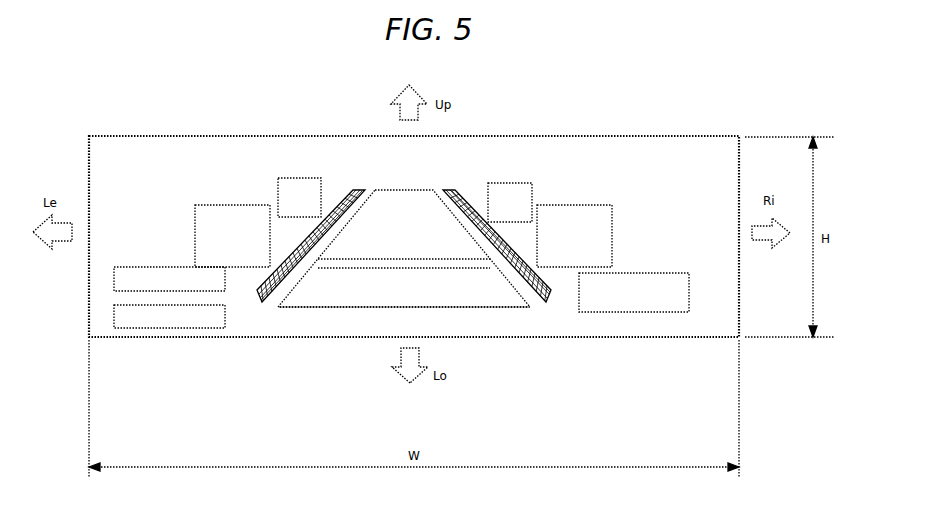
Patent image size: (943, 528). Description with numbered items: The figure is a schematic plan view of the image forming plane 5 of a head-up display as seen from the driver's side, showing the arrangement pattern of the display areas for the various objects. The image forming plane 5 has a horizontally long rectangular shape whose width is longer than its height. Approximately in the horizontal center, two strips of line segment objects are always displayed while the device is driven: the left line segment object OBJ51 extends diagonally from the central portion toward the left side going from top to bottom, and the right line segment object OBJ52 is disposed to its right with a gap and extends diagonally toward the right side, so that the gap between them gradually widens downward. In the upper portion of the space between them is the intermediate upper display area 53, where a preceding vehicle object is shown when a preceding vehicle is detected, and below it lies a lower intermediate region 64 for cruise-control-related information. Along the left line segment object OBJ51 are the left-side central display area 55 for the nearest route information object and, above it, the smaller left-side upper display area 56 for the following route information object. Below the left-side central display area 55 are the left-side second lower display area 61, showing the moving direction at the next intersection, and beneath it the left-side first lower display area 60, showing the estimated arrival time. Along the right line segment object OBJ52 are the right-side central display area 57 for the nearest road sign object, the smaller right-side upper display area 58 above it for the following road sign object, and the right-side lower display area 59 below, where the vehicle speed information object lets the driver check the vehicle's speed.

The image forming plane 5 is at (100, 136).
The intermediate upper display area 53 is at (422, 190).
The left-side central display area 55 is at (223, 205).
The left-side upper display area 56 is at (306, 178).
The right-side central display area 57 is at (590, 205).
The right-side upper display area 58 is at (518, 183).
The right-side lower display area 59 is at (667, 315).
The left-side first lower display area 60 is at (168, 328).
The left-side second lower display area 61 is at (117, 292).
The lower edge line 64 is at (375, 307).
The left line segment object OBJ51 is at (262, 300).
The right line segment object OBJ52 is at (547, 297).